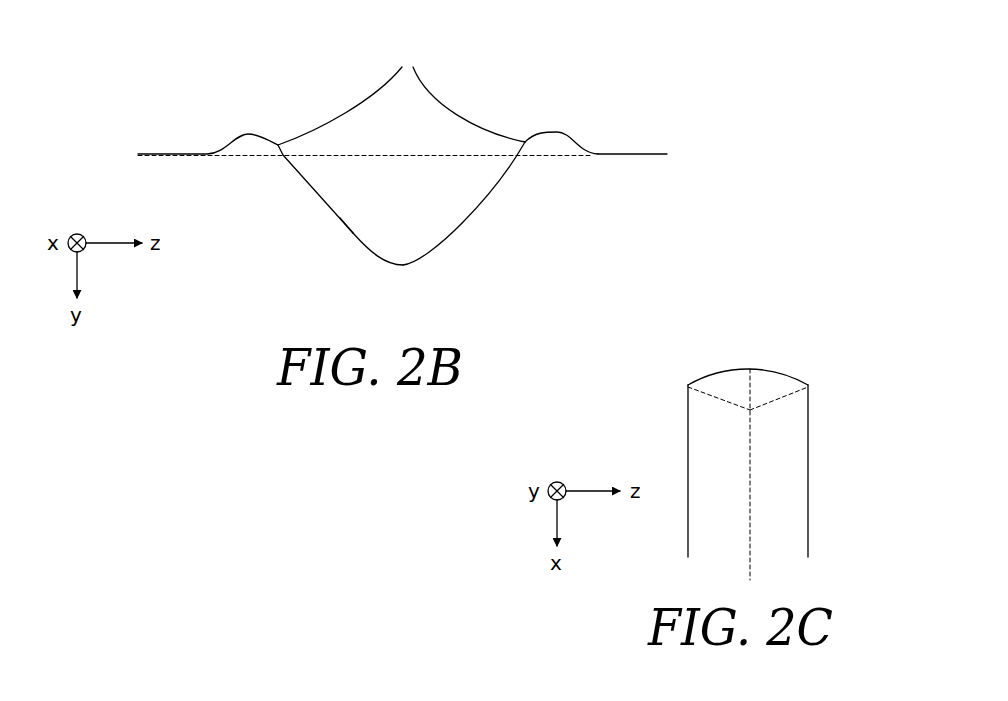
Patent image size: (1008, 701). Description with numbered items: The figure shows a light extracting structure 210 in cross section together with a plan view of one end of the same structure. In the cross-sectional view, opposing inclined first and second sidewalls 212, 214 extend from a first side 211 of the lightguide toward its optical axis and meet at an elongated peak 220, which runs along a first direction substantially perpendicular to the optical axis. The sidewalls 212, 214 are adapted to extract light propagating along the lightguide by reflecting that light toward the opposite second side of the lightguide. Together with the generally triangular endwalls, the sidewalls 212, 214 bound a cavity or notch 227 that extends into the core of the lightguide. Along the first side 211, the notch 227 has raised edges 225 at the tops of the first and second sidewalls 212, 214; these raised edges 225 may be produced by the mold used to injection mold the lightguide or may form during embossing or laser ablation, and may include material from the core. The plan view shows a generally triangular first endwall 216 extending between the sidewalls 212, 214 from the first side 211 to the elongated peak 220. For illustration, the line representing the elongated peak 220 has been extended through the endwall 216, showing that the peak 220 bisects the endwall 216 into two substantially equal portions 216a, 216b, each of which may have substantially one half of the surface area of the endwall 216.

In FIG. 2B, the light extracting structure 210 is at (186, 67).
In FIG. 2B, the first side 211 is at (640, 152).
In FIG. 2B, the first sidewall 212 is at (310, 188).
In FIG. 2B, the second sidewall 214 is at (496, 184).
In FIG. 2C, the first endwall 216 is at (737, 378).
In FIG. 2C, the first portion of endwall 216a is at (713, 382).
In FIG. 2C, the second portion of endwall 216b is at (782, 380).
In FIG. 2B, the elongated peak 220 is at (405, 265).
In FIG. 2C, the elongated peak 220 is at (750, 474).
In FIG. 2B, the raised edges 225 is at (401, 92).
In FIG. 2B, the notch 227 is at (368, 225).